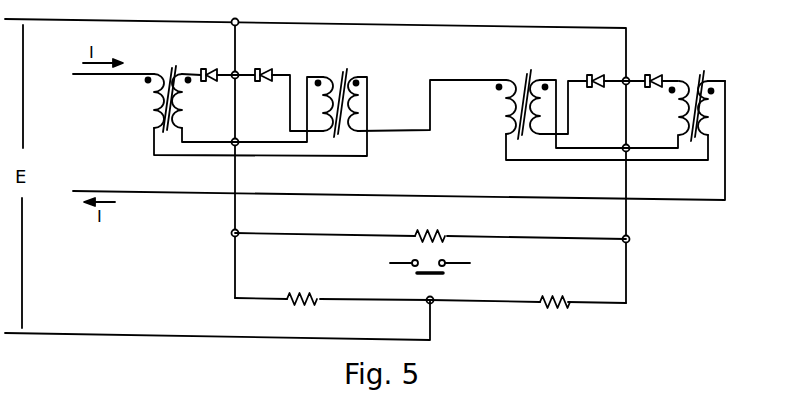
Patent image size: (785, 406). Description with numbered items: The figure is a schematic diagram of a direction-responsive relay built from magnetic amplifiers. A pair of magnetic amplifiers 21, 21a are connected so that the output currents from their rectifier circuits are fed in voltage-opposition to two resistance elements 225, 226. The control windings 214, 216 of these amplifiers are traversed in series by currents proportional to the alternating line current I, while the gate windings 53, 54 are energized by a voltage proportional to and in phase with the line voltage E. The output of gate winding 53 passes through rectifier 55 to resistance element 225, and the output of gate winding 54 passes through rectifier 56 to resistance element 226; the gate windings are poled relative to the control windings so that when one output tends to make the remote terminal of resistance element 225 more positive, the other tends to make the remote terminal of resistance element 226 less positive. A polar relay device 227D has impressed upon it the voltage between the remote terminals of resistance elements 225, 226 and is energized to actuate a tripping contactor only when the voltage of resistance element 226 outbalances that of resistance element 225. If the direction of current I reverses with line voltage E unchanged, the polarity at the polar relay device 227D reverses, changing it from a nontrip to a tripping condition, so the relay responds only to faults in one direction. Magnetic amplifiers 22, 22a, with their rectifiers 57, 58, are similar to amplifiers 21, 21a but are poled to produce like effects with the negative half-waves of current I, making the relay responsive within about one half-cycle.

The magnetic amplifier 21 is at (162, 83).
The control winding 214 is at (135, 101).
The gate winding 53 is at (195, 101).
The rectifier 55 is at (205, 64).
The rectifier 57 is at (259, 66).
The magnetic amplifier 22 is at (340, 69).
The magnetic amplifier 21a is at (528, 90).
The control winding 216 is at (504, 111).
The gate winding 54 is at (540, 116).
The rectifier 56 is at (603, 72).
The rectifier 58 is at (652, 71).
The magnetic amplifier 22a is at (686, 72).
The polar relay device 227D is at (432, 248).
The resistance element 225 is at (306, 311).
The resistance element 226 is at (550, 313).